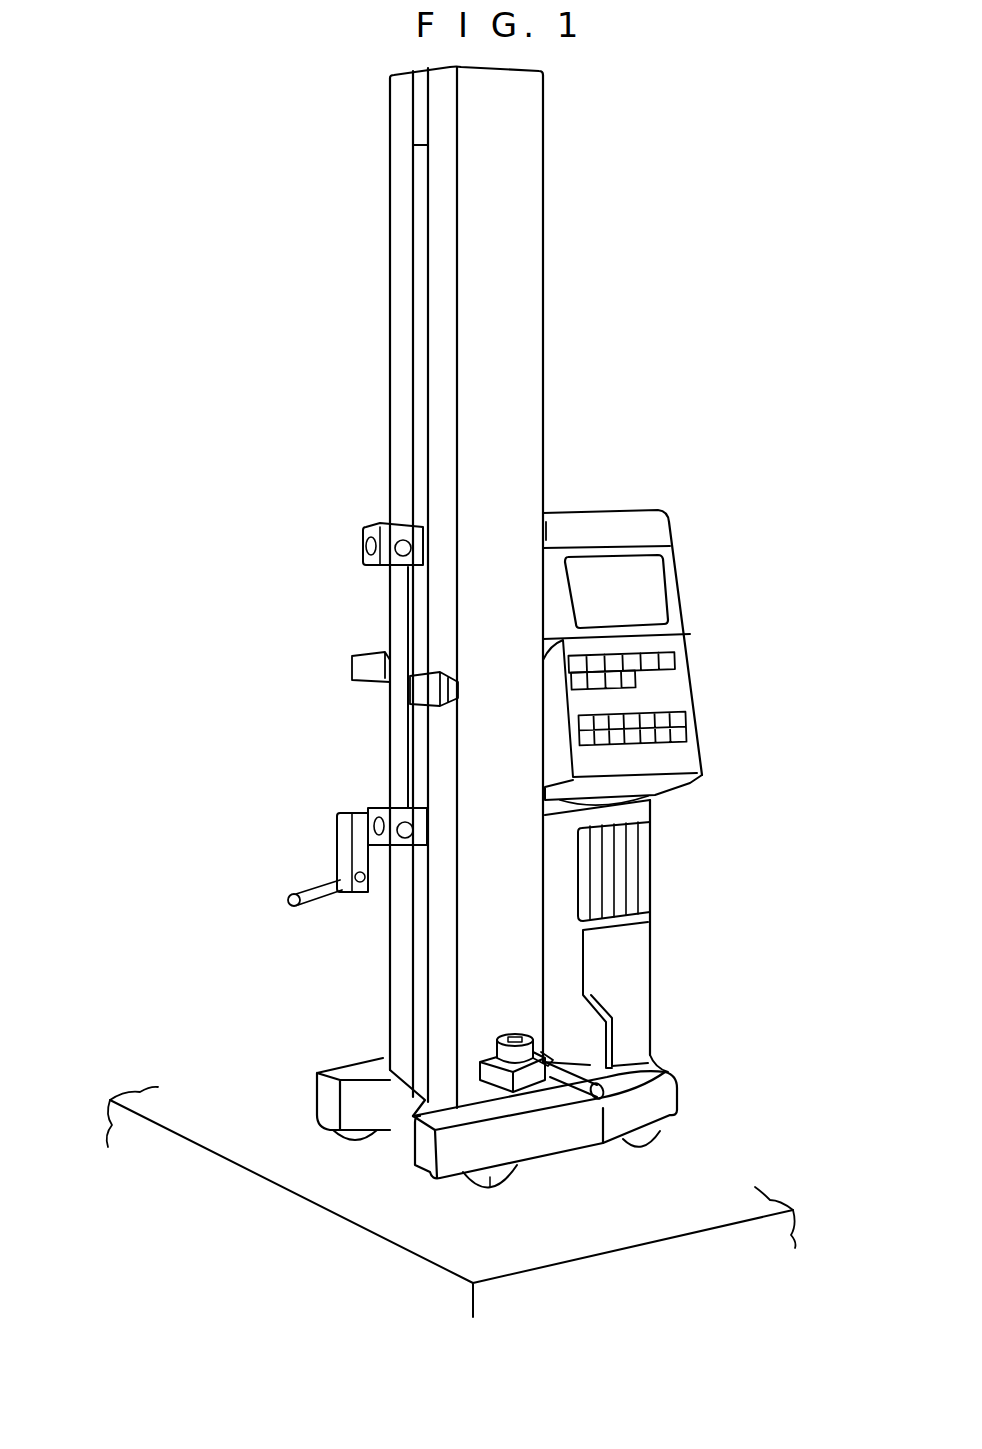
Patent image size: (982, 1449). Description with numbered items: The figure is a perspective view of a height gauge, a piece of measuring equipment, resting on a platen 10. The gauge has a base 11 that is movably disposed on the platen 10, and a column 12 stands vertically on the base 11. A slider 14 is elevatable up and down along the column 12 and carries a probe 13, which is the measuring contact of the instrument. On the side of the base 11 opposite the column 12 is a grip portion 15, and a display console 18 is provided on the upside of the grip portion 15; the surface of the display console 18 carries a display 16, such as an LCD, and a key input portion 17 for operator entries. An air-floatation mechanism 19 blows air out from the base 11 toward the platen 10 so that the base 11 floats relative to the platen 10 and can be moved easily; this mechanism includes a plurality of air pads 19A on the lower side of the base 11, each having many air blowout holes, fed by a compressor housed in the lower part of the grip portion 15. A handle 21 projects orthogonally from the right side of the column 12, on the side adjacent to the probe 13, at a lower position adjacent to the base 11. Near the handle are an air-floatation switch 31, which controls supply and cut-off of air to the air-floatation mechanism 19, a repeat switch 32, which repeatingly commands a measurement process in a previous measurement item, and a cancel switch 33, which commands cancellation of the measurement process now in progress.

The platen 10 is at (137, 1155).
The base 11 is at (340, 1070).
The column 12 is at (392, 262).
The probe 13 is at (290, 893).
The slider 14 is at (393, 745).
The grip portion 15 is at (640, 958).
The display 16 is at (657, 585).
The key input portion 17 is at (672, 699).
The display console 18 is at (686, 657).
The air-floatation mechanism 19 is at (353, 1140).
The air pad 19A is at (488, 1187).
The handle 21 is at (665, 1083).
The air-floatation switch 31 is at (550, 1065).
The repeat switch 32 is at (542, 1053).
The cancel switch 33 is at (530, 1033).